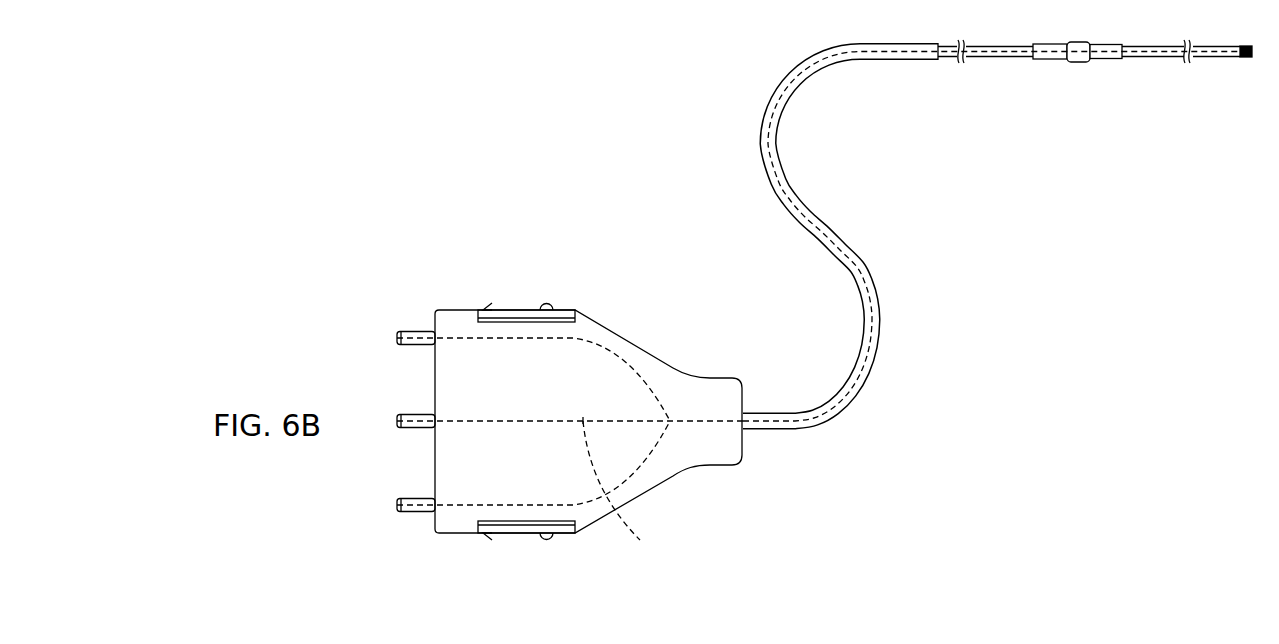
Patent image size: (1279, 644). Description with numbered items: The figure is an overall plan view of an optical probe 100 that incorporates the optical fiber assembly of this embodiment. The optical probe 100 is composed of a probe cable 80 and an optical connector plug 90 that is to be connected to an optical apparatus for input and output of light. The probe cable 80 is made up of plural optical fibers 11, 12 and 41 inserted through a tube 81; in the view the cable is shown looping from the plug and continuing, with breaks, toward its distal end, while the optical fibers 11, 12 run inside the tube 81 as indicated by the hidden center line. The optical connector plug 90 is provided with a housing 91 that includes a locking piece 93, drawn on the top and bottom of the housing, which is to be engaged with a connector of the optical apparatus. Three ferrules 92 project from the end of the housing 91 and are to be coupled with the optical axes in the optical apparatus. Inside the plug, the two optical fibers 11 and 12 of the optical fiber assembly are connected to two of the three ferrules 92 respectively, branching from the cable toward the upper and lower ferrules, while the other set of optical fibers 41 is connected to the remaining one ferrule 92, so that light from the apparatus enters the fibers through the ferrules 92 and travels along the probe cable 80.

The optical probe 100 is at (656, 172).
The optical connector plug 90 is at (681, 369).
The housing 91 is at (636, 344).
The ferrules 92 is at (411, 331).
The locking piece 93 is at (518, 310).
The probe cable 80 is at (827, 49).
The tube 81 is at (1141, 58).
The optical fiber 11 is at (463, 336).
The optical fiber 12 is at (470, 507).
The optical fibers 41 is at (619, 494).